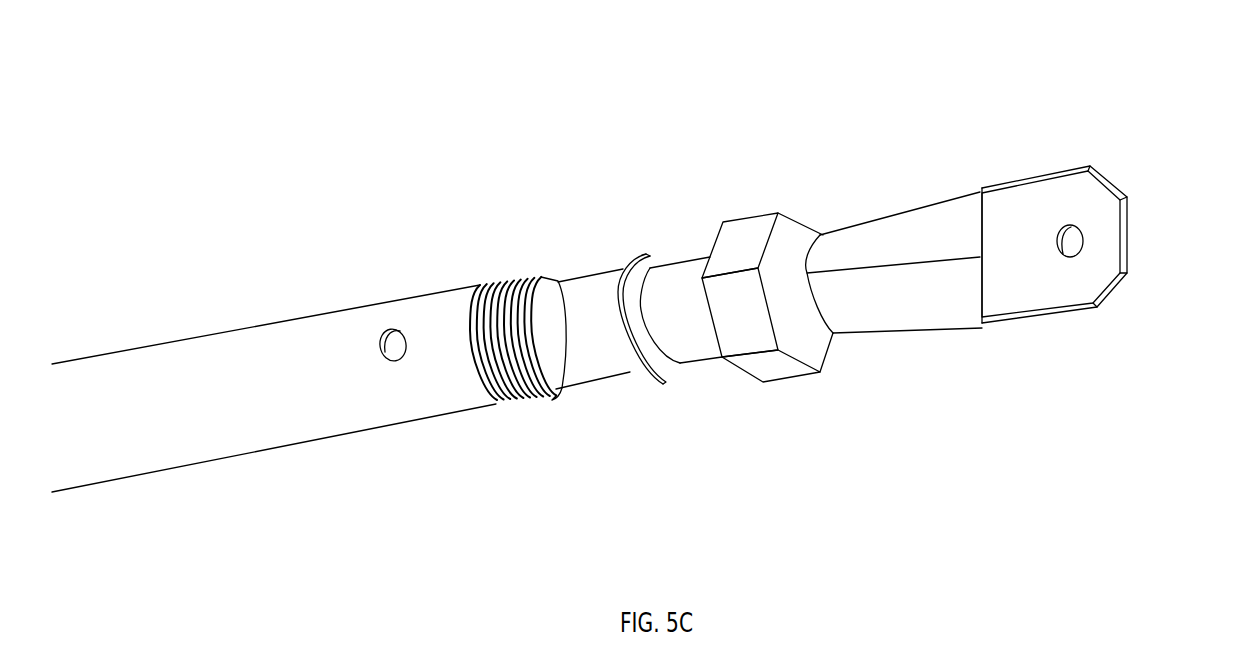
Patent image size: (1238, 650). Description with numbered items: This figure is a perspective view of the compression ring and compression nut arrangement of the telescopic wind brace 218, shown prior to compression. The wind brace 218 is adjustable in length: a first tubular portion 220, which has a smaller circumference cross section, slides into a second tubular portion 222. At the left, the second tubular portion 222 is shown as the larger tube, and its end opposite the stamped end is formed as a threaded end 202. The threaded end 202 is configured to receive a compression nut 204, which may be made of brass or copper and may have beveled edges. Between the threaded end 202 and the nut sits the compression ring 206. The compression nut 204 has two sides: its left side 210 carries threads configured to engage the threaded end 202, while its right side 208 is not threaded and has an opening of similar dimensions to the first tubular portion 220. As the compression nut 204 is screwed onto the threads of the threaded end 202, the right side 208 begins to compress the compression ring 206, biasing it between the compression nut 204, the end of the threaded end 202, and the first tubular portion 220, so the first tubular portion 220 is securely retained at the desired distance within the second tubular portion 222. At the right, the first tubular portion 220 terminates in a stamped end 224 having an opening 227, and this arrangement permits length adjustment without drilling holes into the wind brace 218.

The wind brace 218 is at (274, 286).
The second tubular portion 222 is at (303, 343).
The threaded end 202 is at (515, 277).
The first tubular portion 220 is at (577, 365).
The compression ring 206 is at (643, 263).
The left side of the compression nut 210 is at (721, 364).
The compression nut 204 is at (747, 233).
The right side of the compression nut 208 is at (808, 350).
The stamped end 224 is at (1108, 199).
The opening 227 is at (1080, 250).